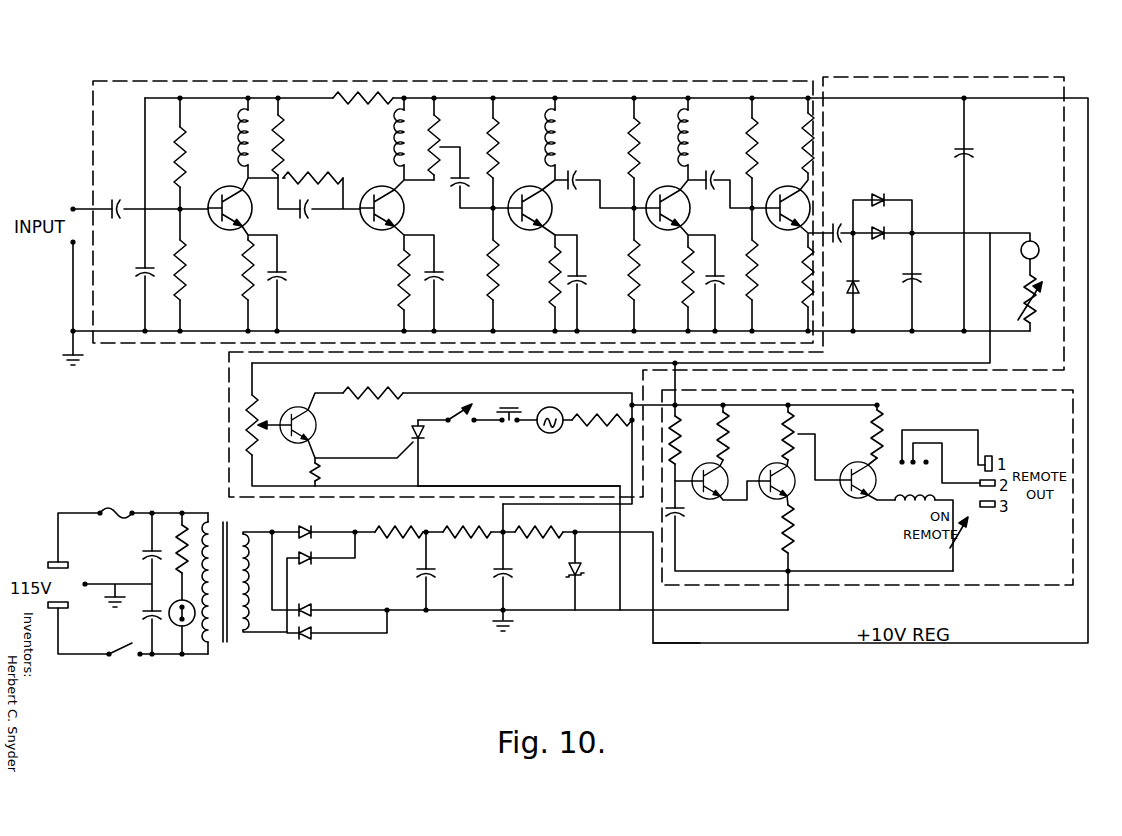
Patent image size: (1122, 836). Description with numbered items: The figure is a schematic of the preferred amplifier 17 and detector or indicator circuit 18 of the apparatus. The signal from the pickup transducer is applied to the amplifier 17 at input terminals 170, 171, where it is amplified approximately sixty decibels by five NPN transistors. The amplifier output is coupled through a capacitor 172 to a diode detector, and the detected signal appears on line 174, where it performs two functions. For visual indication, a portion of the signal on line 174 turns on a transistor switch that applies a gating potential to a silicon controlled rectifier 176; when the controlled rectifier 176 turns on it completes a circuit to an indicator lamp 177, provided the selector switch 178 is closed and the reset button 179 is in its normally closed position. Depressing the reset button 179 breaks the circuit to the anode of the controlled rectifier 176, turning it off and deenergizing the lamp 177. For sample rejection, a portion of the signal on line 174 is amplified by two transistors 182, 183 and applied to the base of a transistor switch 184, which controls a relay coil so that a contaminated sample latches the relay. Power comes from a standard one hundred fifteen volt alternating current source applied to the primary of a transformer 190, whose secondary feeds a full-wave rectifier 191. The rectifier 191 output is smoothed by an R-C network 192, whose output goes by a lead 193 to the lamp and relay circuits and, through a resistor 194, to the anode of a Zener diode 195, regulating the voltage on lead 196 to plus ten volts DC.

The amplifier 17 is at (518, 78).
The detector or indicator circuit 18 is at (940, 77).
The input terminal 170 is at (73, 205).
The input terminal 171 is at (71, 246).
The capacitor 172 is at (841, 230).
The line 174 is at (943, 363).
The silicon controlled rectifier 176 is at (410, 442).
The indicator lamp 177 is at (558, 433).
The selector switch 178 is at (470, 423).
The reset button 179 is at (512, 425).
The transistor 182 is at (705, 500).
The transistor 183 is at (761, 497).
The transistor switch 184 is at (848, 497).
The transformer 190 is at (229, 530).
The full-wave rectifier 191 is at (322, 594).
The R-C network 192 is at (483, 581).
The lead 193 is at (612, 504).
The resistor 194 is at (546, 532).
The Zener diode 195 is at (577, 568).
The lead 196 is at (688, 643).